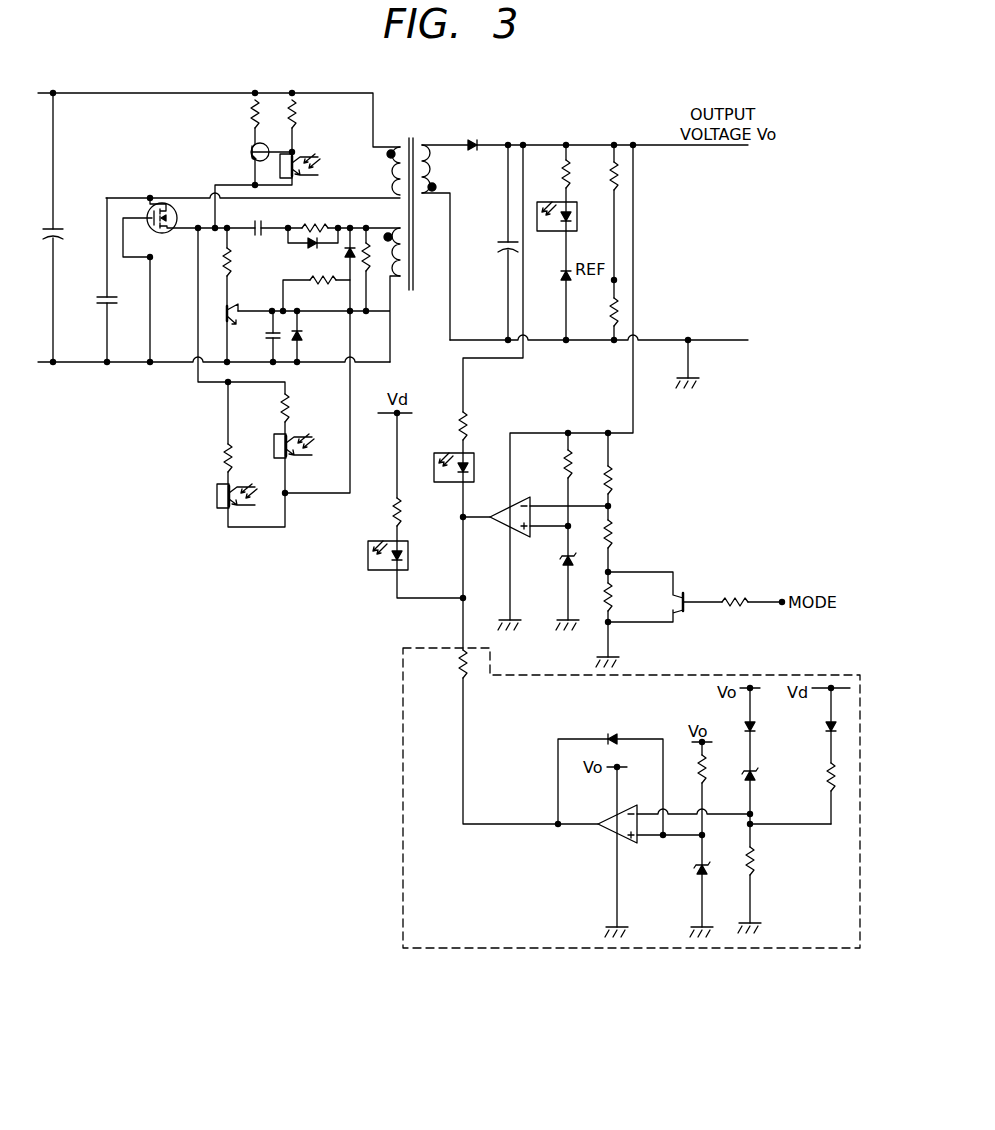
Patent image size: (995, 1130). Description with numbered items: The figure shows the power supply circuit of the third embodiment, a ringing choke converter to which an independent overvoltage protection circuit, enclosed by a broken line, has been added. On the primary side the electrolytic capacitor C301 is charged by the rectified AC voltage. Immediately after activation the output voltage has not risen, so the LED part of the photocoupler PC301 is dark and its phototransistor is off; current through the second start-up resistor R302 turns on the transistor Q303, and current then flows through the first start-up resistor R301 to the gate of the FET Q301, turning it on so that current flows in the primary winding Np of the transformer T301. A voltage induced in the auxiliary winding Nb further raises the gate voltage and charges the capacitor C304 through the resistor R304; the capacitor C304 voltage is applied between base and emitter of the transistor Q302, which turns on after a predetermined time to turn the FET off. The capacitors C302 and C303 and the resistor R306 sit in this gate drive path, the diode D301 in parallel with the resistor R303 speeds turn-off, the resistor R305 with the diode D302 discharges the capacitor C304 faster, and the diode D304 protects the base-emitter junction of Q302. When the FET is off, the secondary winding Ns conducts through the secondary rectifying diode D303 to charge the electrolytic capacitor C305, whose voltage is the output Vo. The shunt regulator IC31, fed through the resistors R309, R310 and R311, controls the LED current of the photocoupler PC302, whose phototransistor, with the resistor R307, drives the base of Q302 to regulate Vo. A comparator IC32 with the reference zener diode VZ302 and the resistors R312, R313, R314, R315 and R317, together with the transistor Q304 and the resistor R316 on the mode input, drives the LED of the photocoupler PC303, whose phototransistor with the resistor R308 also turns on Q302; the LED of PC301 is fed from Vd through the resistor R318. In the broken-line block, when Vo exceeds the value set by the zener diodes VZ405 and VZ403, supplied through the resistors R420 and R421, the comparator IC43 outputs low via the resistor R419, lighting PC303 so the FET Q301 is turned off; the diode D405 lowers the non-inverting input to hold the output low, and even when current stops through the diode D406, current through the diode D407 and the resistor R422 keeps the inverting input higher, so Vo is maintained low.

The electrolytic capacitor C301 is at (71, 224).
The capacitor C302 is at (89, 308).
The capacitor C303 is at (256, 218).
The capacitor C304 is at (260, 337).
The electrolytic capacitor C305 is at (491, 237).
The FET Q301 is at (160, 280).
The transistor Q302 is at (251, 306).
The transistor Q303 is at (248, 153).
The transistor Q304 is at (665, 604).
The first start-up resistor R301 is at (232, 142).
The second start-up resistor R302 is at (314, 114).
The resistor R303 is at (313, 216).
The resistor R304 is at (370, 268).
The resistor R305 is at (324, 293).
The resistor R306 is at (248, 262).
The resistor R307 is at (308, 408).
The resistor R308 is at (205, 458).
The resistor R309 is at (565, 160).
The resistor R310 is at (612, 165).
The resistor R311 is at (620, 312).
The resistor R312 is at (440, 426).
The resistor R313 is at (546, 464).
The resistor R314 is at (631, 480).
The resistor R315 is at (631, 535).
The resistor R316 is at (747, 591).
The resistor R317 is at (631, 598).
The resistor R318 is at (374, 512).
The resistor R419 is at (438, 665).
The resistor R420 is at (698, 770).
The resistor R421 is at (773, 861).
The resistor R422 is at (826, 783).
The diode D301 is at (311, 255).
The diode D302 is at (353, 242).
The secondary rectifying diode D303 is at (479, 158).
The diode D304 is at (320, 337).
The diode D405 is at (613, 729).
The diode D406 is at (772, 727).
The diode D407 is at (826, 729).
The zener diode VZ302 is at (545, 572).
The zener diode VZ403 is at (675, 872).
The zener diode VZ405 is at (776, 778).
The photocoupler PC301 is at (344, 353).
The photocoupler PC302 is at (578, 220).
The photocoupler PC303 is at (316, 480).
The shunt regulator IC31 is at (548, 289).
The comparator IC32 is at (499, 524).
The comparator IC43 is at (602, 830).
The transformer T301 is at (412, 204).
The primary winding Np is at (388, 175).
The secondary winding Ns is at (437, 175).
The auxiliary winding Nb is at (388, 256).